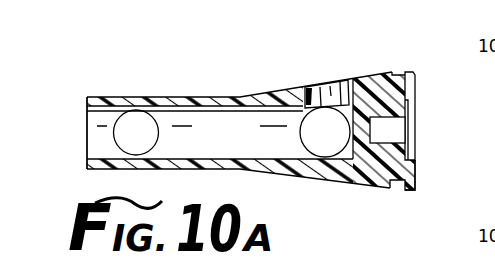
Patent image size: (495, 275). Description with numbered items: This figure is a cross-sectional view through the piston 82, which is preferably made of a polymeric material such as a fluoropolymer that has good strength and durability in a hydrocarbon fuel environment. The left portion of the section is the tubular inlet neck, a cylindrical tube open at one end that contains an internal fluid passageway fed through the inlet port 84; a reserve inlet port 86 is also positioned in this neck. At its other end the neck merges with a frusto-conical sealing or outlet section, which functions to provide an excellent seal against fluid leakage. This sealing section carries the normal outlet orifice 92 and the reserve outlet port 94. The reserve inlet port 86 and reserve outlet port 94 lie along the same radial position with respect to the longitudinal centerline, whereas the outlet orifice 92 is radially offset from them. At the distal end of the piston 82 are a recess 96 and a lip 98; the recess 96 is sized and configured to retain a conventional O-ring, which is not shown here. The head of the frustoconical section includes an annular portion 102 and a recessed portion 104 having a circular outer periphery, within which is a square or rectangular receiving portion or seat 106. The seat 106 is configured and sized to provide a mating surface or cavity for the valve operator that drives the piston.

The piston 82 is at (233, 82).
The inlet port 84 is at (86, 99).
The reserve inlet port 86 is at (138, 130).
The normal outlet orifice 92 is at (327, 82).
The reserve outlet port 94 is at (323, 133).
The recess 96 is at (402, 63).
The lip 98 is at (409, 71).
The annular portion 102 is at (417, 178).
The recessed portion 104 is at (408, 112).
The receiving portion or seat 106 is at (390, 132).